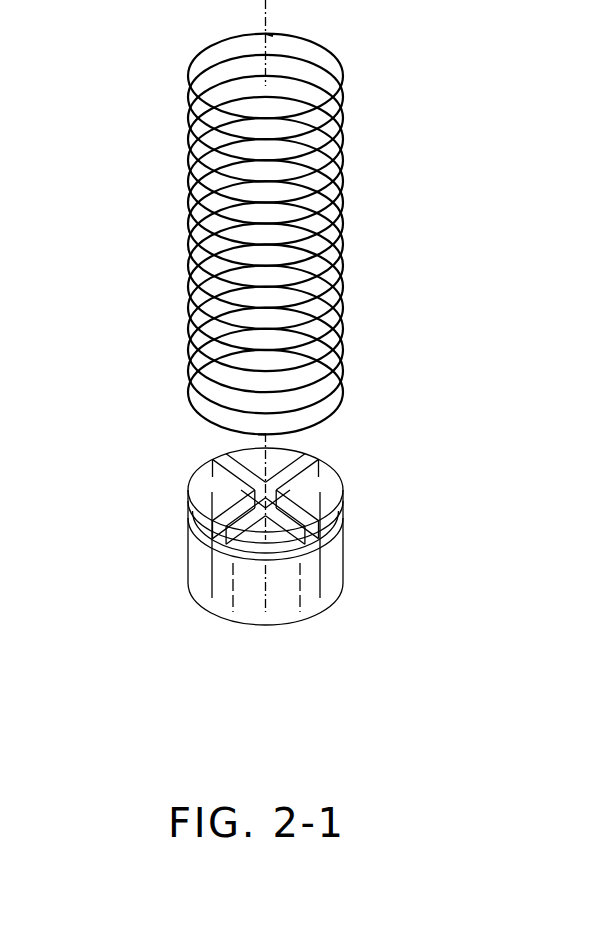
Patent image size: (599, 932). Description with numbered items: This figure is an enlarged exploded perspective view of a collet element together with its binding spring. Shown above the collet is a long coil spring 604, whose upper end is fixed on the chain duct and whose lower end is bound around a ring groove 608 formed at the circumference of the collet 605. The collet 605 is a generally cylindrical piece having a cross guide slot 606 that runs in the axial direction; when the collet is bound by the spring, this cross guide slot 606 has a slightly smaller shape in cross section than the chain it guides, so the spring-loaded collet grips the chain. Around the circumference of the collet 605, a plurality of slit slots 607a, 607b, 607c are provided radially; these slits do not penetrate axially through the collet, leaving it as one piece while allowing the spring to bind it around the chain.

The coil spring 604 is at (190, 162).
The collet 605 is at (343, 568).
The cross guide slot 606 is at (345, 497).
The slit slot 607a is at (190, 588).
The slit slot 607b is at (340, 595).
The slit slot 607c is at (318, 460).
The ring groove 608 is at (190, 553).